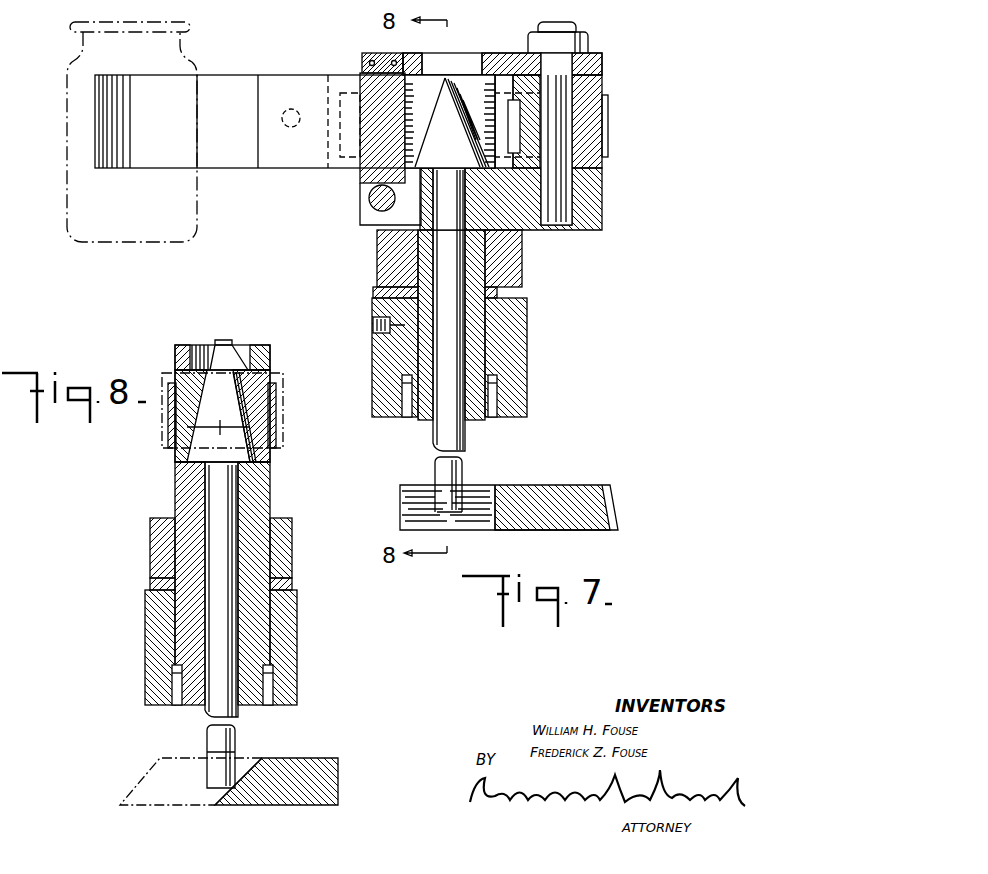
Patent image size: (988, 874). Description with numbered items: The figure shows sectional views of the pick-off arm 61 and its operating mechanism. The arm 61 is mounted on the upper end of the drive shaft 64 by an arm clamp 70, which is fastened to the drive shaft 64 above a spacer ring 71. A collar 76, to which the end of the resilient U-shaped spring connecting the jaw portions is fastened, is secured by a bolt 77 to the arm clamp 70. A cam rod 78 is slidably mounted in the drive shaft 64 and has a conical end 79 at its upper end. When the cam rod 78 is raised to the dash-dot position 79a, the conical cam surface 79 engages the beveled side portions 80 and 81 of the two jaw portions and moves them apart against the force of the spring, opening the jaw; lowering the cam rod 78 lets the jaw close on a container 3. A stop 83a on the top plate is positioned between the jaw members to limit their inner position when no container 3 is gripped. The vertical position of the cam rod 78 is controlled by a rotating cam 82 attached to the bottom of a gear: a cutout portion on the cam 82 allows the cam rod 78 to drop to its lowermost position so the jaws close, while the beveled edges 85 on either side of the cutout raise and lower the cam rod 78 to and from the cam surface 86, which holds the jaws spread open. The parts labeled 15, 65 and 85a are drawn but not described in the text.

In FIG. 7, the container 3 is at (196, 58).
In FIG. 7, the arm 61 is at (291, 73).
In FIG. 7, the stop 83a is at (357, 131).
In FIG. 7, the beveled side portion 80 is at (417, 98).
In FIG. 8, the beveled side portion 80 is at (255, 398).
In FIG. 7, the conical end 79 is at (463, 105).
In FIG. 8, the conical end 79 is at (232, 392).
In FIG. 8, the dash-dot position 79a is at (230, 352).
In FIG. 7, the bolt 77 is at (557, 80).
In FIG. 7, the collar 76 is at (597, 90).
In FIG. 7, the jaw 15 is at (608, 120).
In FIG. 7, the arm clamp 70 is at (592, 190).
In FIG. 7, the spacer ring 71 is at (515, 265).
In FIG. 7, the drive shaft 64 is at (478, 325).
In FIG. 8, the drive shaft 64 is at (258, 530).
In FIG. 7, the nut 65 is at (513, 355).
In FIG. 8, the nut 65 is at (285, 643).
In FIG. 7, the cam rod 78 is at (448, 440).
In FIG. 8, the cam rod 78 is at (210, 552).
In FIG. 8, the beveled side portion 81 is at (180, 382).
In FIG. 7, the beveled edge 85 is at (465, 505).
In FIG. 8, the beveled edge 85 is at (252, 760).
In FIG. 7, the pin end 85a is at (424, 485).
In FIG. 7, the cam surface 86 is at (527, 485).
In FIG. 8, the cam surface 86 is at (296, 760).
In FIG. 7, the cam 82 is at (572, 500).
In FIG. 8, the cam 82 is at (322, 764).